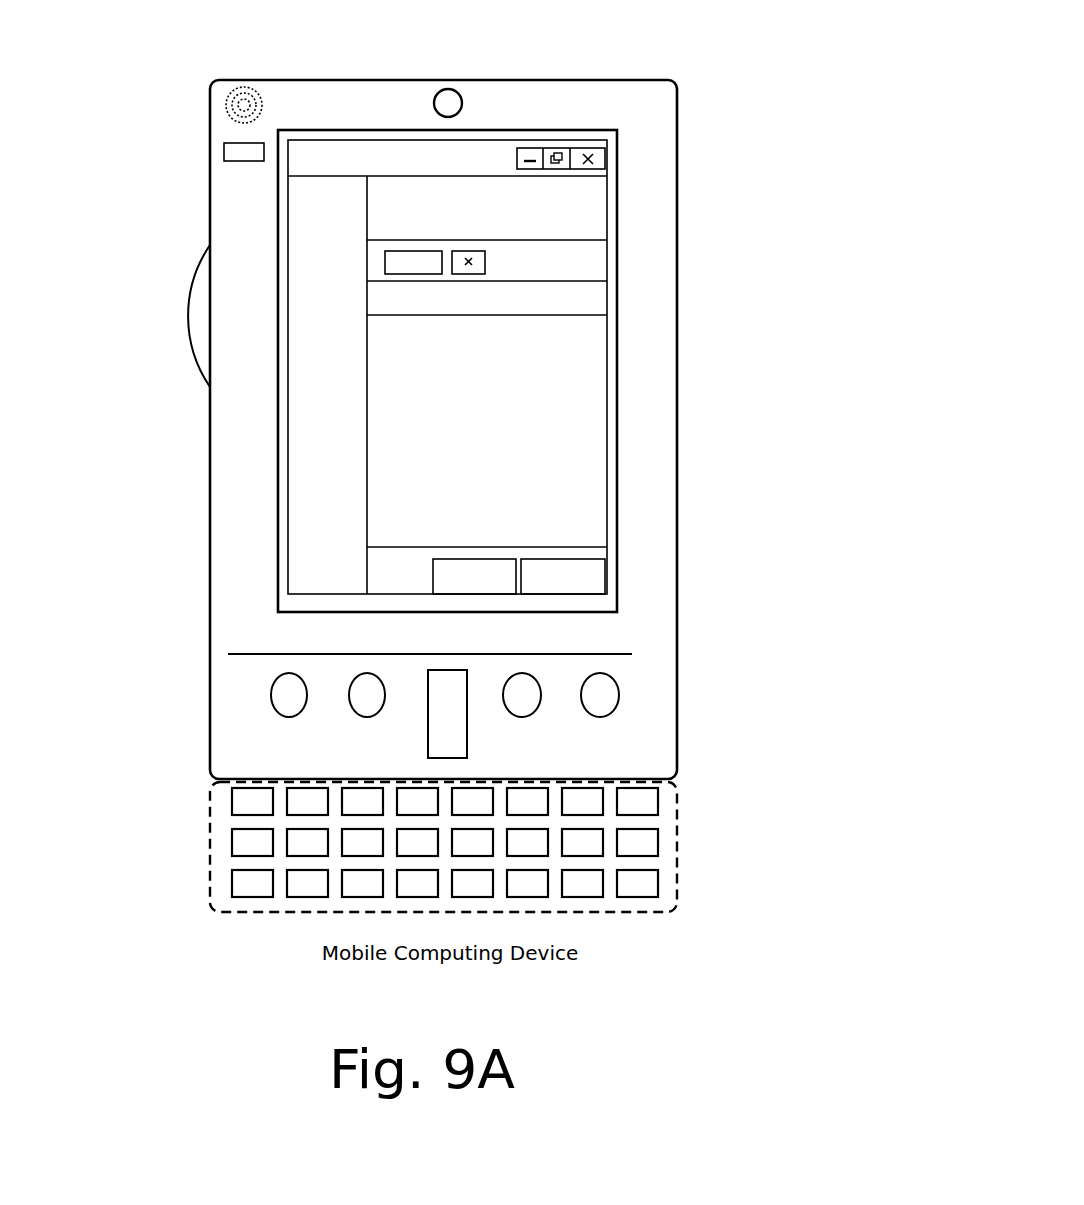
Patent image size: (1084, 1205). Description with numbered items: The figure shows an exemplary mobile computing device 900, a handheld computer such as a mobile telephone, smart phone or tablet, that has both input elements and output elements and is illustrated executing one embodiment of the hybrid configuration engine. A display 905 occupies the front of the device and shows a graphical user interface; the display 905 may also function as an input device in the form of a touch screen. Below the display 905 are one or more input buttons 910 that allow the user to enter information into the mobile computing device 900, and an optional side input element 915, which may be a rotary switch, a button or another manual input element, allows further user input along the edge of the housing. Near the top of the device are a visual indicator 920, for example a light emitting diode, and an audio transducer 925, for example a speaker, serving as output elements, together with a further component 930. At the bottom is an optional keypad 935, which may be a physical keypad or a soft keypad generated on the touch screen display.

The mobile computing device 900 is at (668, 92).
The display 905 is at (400, 575).
The input buttons 910 is at (447, 720).
The side input element 915 is at (202, 314).
The visual indicator 920 is at (224, 157).
The audio transducer 925 is at (224, 107).
The camera 930 is at (460, 100).
The keypad 935 is at (219, 887).